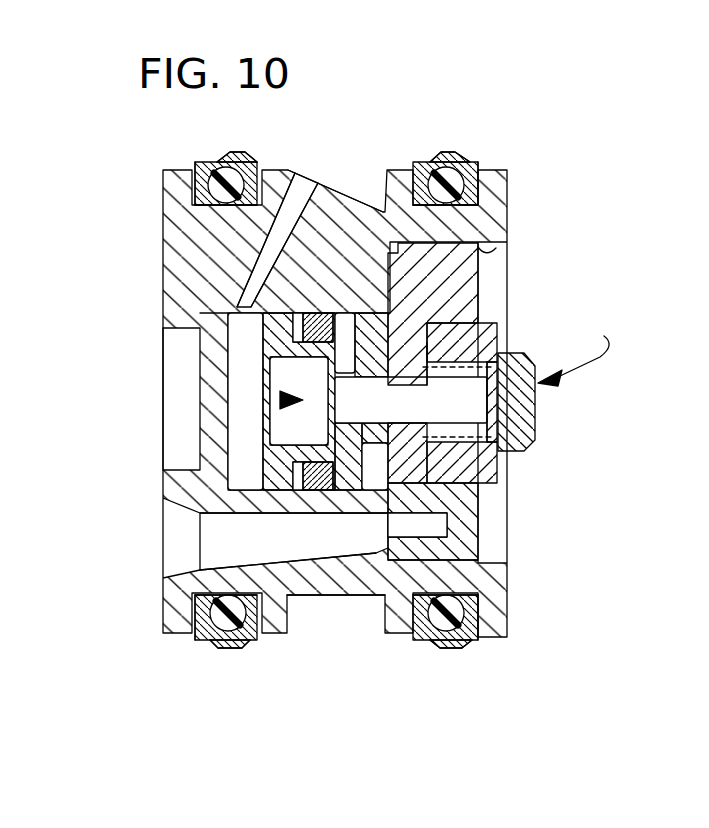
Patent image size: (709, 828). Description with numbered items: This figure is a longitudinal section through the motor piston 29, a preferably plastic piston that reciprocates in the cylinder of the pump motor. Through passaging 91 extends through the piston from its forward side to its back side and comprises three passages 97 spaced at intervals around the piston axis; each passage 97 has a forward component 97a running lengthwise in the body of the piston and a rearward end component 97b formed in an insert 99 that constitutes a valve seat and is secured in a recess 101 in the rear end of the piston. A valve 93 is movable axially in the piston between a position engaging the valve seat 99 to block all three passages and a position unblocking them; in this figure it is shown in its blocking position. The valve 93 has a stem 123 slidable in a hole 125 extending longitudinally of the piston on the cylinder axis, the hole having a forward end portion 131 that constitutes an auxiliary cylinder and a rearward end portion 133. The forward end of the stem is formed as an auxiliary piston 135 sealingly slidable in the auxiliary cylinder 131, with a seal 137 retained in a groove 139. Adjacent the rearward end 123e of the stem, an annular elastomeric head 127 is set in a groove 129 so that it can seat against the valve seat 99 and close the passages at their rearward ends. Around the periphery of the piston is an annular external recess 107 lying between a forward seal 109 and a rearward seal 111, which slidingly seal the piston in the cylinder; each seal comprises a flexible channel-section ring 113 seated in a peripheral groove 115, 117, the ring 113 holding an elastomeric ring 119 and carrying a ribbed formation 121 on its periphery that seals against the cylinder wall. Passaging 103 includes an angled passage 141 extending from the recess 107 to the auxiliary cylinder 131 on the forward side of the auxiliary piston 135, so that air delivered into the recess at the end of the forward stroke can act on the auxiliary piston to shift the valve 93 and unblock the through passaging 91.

The piston 29 is at (150, 158).
The passaging 91 is at (148, 533).
The valve 93 is at (573, 353).
The passage 97 is at (336, 557).
The forward component 97a is at (281, 548).
The rearward end component 97b is at (480, 498).
The insert 99 is at (482, 290).
The recess 101 is at (492, 248).
The passaging 103 is at (245, 298).
The external recess 107 is at (369, 200).
The forward seal 109 is at (225, 149).
The rearward seal 111 is at (492, 149).
The channel-section ring 113 is at (250, 180).
The peripheral groove 115 is at (225, 195).
The peripheral groove 117 is at (505, 188).
The elastomeric ring 119 is at (230, 200).
The ribbed formation 121 is at (236, 162).
The stem 123 is at (470, 458).
The rearward end 123e is at (537, 400).
The hole 125 is at (282, 398).
The head 127 is at (487, 323).
The groove 129 is at (498, 428).
The forward end portion 131 is at (265, 430).
The rearward end portion 133 is at (397, 350).
The auxiliary piston 135 is at (285, 327).
The seal 137 is at (305, 476).
The groove 139 is at (295, 466).
The angled passage 141 is at (305, 183).